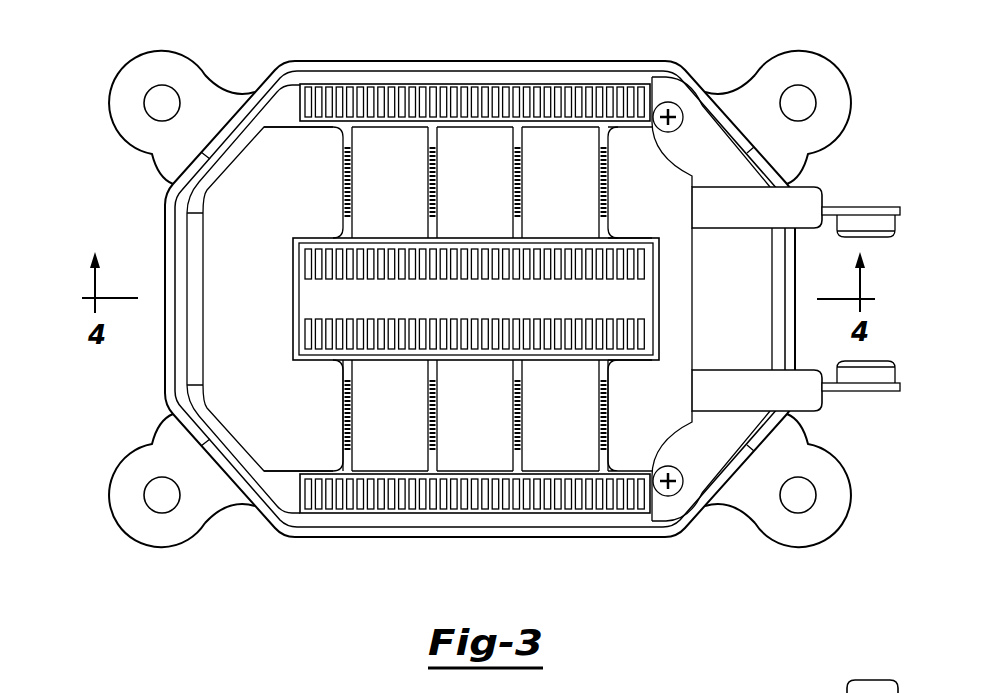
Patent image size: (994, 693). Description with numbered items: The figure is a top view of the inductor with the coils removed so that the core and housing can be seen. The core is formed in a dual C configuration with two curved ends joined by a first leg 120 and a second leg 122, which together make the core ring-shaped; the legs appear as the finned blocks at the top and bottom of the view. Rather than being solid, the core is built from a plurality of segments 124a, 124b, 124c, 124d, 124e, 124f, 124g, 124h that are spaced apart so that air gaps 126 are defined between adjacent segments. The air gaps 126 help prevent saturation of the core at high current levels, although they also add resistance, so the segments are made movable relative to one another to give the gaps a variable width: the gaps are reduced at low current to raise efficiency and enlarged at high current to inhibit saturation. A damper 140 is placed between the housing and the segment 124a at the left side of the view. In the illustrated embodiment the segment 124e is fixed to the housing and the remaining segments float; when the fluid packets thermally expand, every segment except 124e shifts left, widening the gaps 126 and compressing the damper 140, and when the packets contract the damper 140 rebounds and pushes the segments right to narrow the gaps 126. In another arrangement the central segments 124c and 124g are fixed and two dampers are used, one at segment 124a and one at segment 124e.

The first leg 120 is at (490, 147).
The second leg 122 is at (492, 450).
The segment 124a is at (322, 418).
The segment 124b is at (367, 430).
The segment 124c is at (479, 415).
The segment 124d is at (565, 415).
The segment 124e is at (628, 179).
The segment 124f is at (560, 165).
The segment 124g is at (479, 182).
The segment 124h is at (394, 182).
The air gap 126 is at (617, 419).
The damper 140 is at (195, 261).